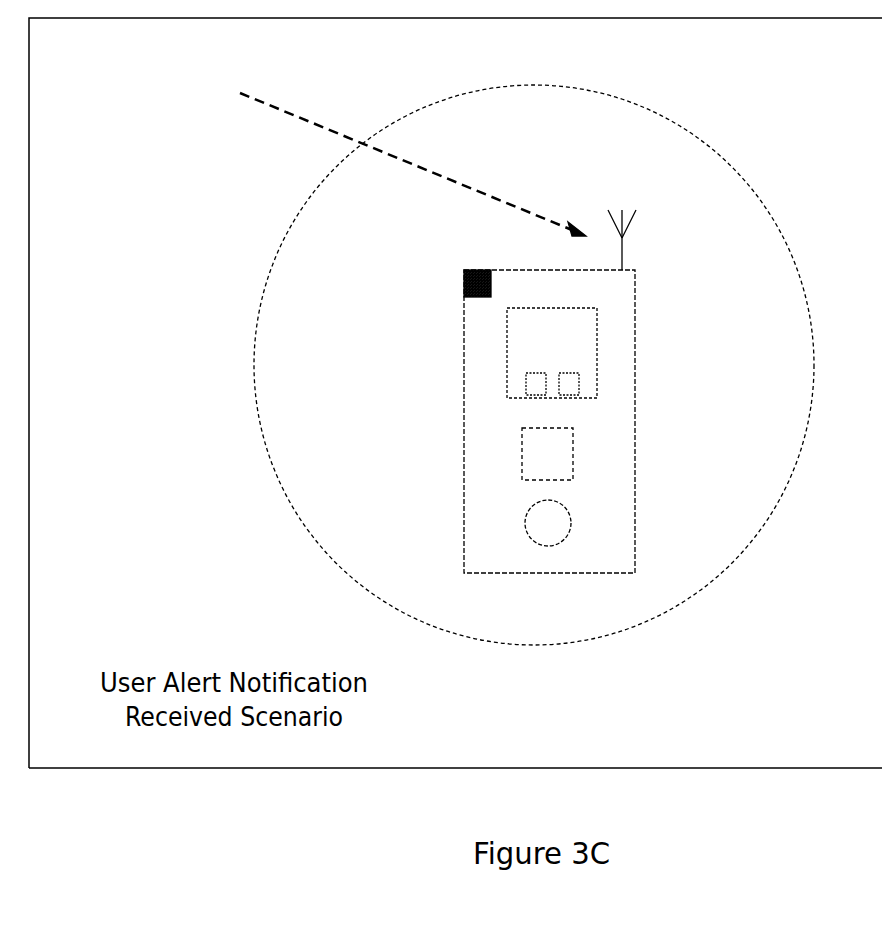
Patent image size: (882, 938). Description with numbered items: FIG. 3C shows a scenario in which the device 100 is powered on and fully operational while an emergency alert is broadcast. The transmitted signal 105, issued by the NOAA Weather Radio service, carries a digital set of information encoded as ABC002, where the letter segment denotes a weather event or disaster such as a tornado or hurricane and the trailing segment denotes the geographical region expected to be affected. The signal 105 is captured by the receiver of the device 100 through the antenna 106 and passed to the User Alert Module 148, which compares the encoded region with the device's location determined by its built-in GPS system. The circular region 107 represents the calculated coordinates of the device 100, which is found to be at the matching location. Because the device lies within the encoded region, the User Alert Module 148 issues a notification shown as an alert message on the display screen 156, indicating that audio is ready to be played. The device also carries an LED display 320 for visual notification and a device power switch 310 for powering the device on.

The device 100 is at (603, 421).
The transmitted signal 105 is at (311, 135).
The antenna 106 is at (655, 232).
The circular region 107 is at (670, 612).
The User Alert Module 148 is at (522, 453).
The display screen 156 is at (597, 370).
The device power switch 310 is at (517, 510).
The LED display 320 is at (464, 283).